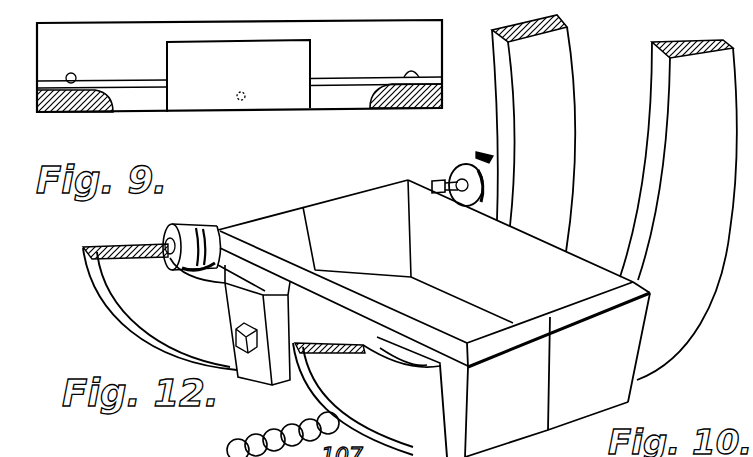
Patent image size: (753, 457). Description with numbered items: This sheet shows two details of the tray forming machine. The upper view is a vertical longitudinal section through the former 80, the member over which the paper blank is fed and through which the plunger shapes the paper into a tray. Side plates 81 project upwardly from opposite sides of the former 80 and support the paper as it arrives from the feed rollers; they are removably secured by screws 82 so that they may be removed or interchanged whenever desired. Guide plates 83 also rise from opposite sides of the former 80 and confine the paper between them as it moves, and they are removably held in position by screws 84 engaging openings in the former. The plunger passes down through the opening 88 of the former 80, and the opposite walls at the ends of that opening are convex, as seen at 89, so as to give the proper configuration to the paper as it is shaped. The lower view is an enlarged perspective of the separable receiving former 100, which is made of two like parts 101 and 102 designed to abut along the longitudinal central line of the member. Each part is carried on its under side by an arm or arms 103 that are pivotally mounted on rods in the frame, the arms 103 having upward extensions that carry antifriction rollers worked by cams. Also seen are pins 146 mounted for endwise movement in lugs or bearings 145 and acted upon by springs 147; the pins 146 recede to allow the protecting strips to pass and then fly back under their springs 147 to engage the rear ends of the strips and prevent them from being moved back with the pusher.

In FIG. 9, the former 80 is at (415, 107).
In FIG. 9, the side plates 81 is at (238, 76).
In FIG. 9, the screws 82 is at (241, 101).
In FIG. 9, the guide plates 83 is at (239, 56).
In FIG. 9, the screws 84 is at (447, 66).
In FIG. 9, the opening 88 is at (156, 102).
In FIG. 9, the convex walls 89 is at (371, 116).
In FIG. 12, the receiving former 100 is at (434, 318).
In FIG. 12, the part of receiving former 101 is at (408, 251).
In FIG. 12, the part of receiving former 102 is at (344, 304).
In FIG. 12, the arms 103 is at (677, 178).
In FIG. 12, the lugs or bearings 145 is at (472, 160).
In FIG. 12, the pins 146 is at (450, 182).
In FIG. 12, the springs 147 is at (460, 195).